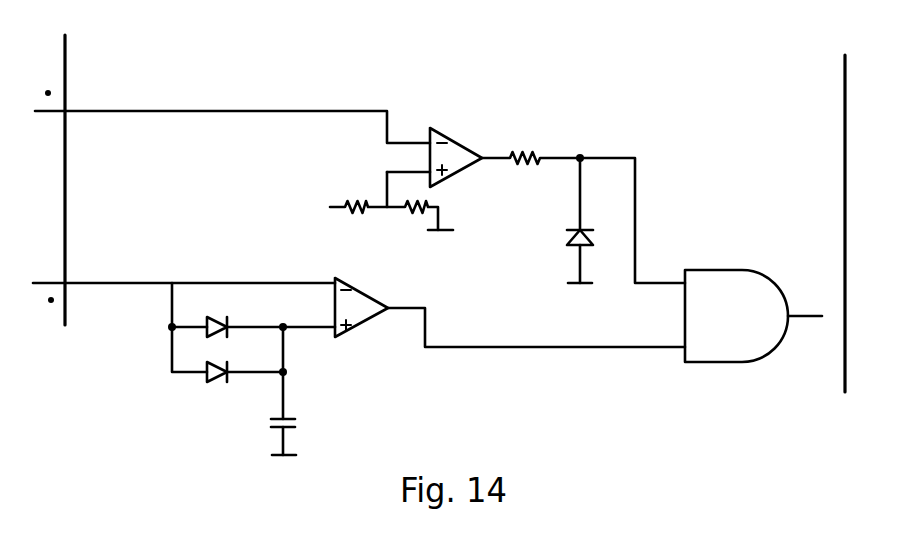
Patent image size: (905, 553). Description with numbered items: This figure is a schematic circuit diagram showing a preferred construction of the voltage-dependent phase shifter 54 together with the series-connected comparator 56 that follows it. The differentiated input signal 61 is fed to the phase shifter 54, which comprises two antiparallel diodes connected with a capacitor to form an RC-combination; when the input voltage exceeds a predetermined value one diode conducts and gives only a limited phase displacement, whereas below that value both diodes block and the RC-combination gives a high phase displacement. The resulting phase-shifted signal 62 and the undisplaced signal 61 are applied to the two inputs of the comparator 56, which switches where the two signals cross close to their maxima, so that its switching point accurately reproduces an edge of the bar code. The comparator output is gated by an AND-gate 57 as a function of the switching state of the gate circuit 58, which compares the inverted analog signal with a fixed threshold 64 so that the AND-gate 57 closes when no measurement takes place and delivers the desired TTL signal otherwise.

The voltage-dependent phase shifter 54 is at (206, 391).
The comparator 56 is at (372, 288).
The AND-gate 57 is at (754, 266).
The gate circuit 58 is at (470, 135).
The differentiated input signal 61 is at (283, 278).
The phase-shifted signal 62 is at (304, 350).
The threshold 64 is at (232, 106).